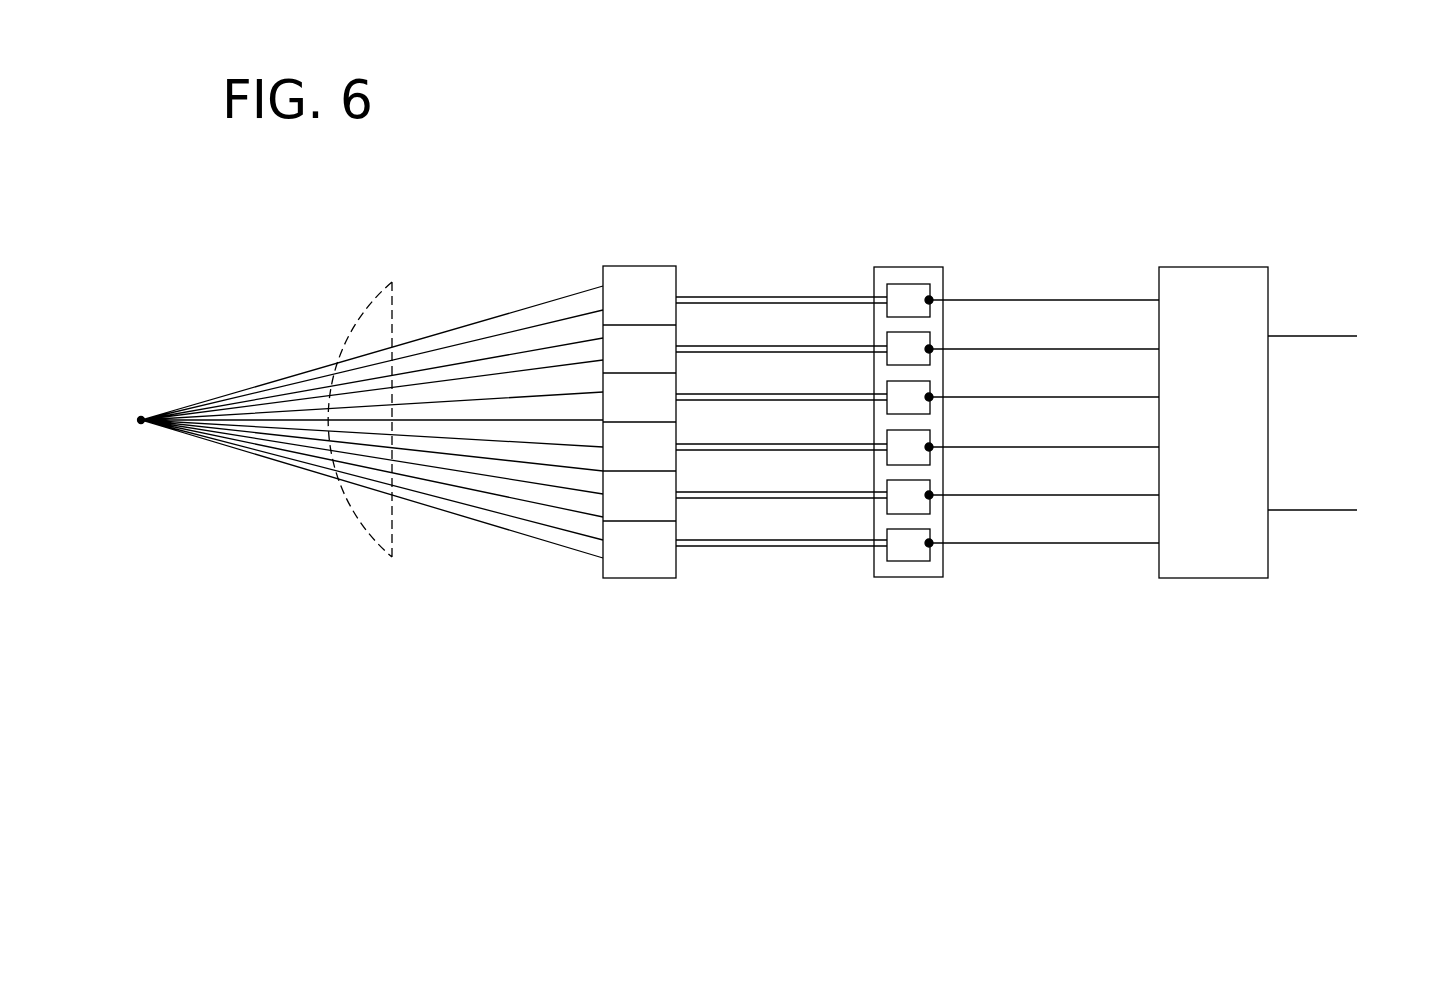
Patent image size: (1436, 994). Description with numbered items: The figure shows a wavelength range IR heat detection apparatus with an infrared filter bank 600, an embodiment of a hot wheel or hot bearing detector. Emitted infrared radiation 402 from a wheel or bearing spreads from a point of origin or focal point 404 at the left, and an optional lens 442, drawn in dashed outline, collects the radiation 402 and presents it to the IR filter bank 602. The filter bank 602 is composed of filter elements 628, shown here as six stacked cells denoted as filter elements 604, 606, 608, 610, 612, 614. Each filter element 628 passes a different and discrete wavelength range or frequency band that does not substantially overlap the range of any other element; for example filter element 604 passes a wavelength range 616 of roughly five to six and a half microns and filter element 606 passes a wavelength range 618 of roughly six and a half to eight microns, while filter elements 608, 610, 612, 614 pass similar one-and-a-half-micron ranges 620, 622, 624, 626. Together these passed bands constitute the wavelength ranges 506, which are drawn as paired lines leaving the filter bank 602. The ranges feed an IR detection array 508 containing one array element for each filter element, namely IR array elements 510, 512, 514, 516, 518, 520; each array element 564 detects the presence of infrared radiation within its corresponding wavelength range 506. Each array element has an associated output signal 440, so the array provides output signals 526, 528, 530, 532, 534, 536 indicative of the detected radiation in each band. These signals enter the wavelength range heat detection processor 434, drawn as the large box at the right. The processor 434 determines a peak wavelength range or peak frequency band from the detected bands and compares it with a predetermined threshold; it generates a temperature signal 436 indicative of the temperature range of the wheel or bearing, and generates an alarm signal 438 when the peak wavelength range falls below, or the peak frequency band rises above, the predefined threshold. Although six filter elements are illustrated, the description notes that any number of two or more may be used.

The wavelength range IR heat detection apparatus with infrared filter bank 600 is at (798, 29).
The emitted infrared radiation 402 is at (268, 459).
The focal point 404 is at (143, 424).
The lens 442 is at (375, 549).
The IR filter bank 602 is at (640, 578).
The filter element 604 is at (645, 295).
The filter element 606 is at (645, 350).
The filter element 608 is at (645, 398).
The filter element 610 is at (645, 448).
The filter element 612 is at (645, 496).
The filter element 614 is at (645, 546).
The wavelength range 616 is at (773, 294).
The wavelength range 618 is at (782, 343).
The wavelength range 620 is at (782, 391).
The wavelength range 622 is at (782, 441).
The wavelength range 624 is at (782, 489).
The wavelength range 626 is at (782, 537).
The wavelength ranges 506 is at (787, 568).
The IR detection array 508 is at (908, 578).
The IR array element 510 is at (930, 292).
The IR array element 512 is at (930, 340).
The IR array element 514 is at (930, 390).
The IR array element 516 is at (930, 438).
The IR array element 518 is at (930, 487).
The IR array element 520 is at (930, 535).
The IR array element 564 is at (900, 575).
The output signal 526 is at (1075, 299).
The output signal 528 is at (1135, 347).
The output signal 530 is at (1140, 396).
The output signal 532 is at (1135, 446).
The output signal 534 is at (1140, 494).
The output signal 536 is at (1142, 542).
The output signal 440 is at (1090, 568).
The wavelength range heat detection processor 434 is at (1193, 578).
The temperature signal 436 is at (1357, 308).
The alarm signal 438 is at (1368, 483).
The filter element 628 is at (630, 586).